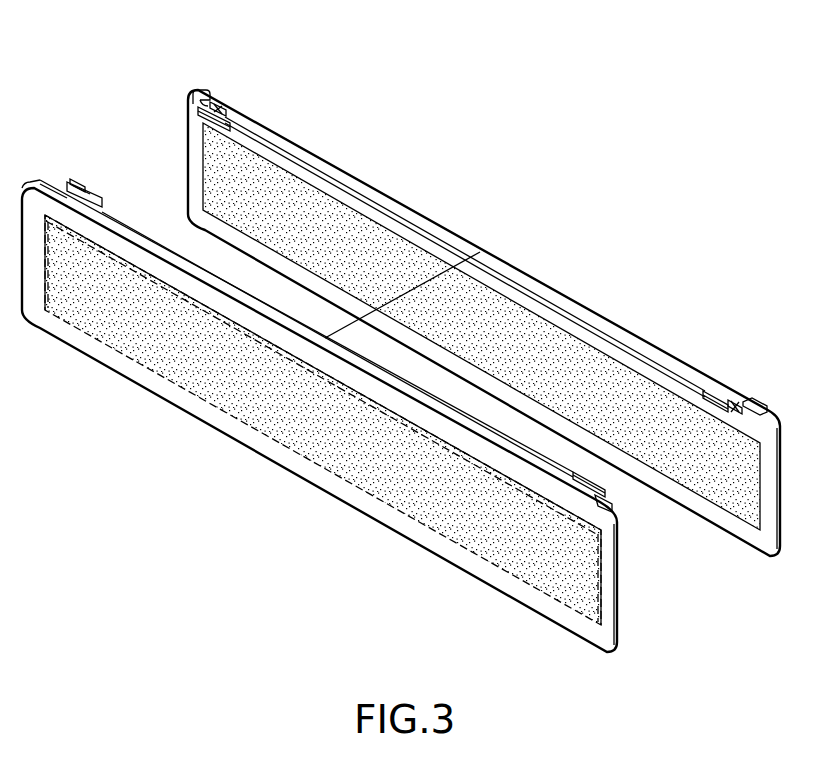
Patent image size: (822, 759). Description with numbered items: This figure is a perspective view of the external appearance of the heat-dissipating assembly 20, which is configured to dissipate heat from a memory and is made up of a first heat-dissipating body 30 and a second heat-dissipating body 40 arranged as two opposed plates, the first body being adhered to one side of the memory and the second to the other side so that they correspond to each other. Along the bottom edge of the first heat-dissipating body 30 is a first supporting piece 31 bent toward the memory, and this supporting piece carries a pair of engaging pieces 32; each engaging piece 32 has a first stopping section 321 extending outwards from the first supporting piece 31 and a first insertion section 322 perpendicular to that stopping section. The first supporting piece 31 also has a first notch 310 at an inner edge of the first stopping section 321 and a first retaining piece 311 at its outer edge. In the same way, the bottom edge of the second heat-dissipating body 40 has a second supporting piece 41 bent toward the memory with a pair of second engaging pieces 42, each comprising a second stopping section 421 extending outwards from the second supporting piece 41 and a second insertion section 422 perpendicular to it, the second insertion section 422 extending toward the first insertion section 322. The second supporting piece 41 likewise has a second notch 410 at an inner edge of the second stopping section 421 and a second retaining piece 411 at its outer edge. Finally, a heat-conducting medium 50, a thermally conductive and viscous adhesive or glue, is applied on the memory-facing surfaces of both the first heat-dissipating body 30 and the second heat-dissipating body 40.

The heat-dissipating assembly 20 is at (416, 48).
The first heat-dissipating body 30 is at (453, 216).
The first supporting piece 31 is at (518, 276).
The engaging piece 32 is at (183, 106).
The first notch 310 is at (212, 101).
The first retaining piece 311 is at (200, 92).
The first stopping section 321 is at (712, 392).
The first insertion section 322 is at (741, 396).
The second heat-dissipating body 40 is at (298, 482).
The second supporting piece 41 is at (147, 240).
The second notch 410 is at (72, 185).
The second retaining piece 411 is at (47, 180).
The second engaging piece 42 is at (63, 172).
The second stopping section 421 is at (585, 496).
The second insertion section 422 is at (588, 474).
The heat-conducting medium 50 is at (208, 164).